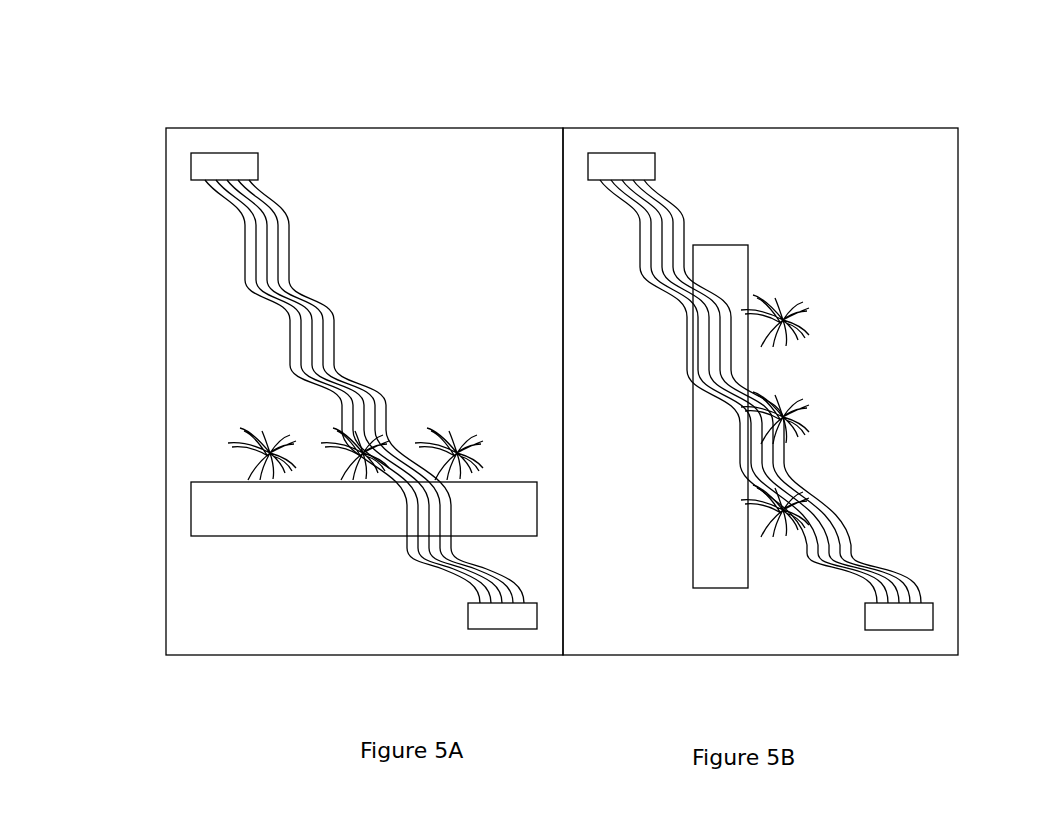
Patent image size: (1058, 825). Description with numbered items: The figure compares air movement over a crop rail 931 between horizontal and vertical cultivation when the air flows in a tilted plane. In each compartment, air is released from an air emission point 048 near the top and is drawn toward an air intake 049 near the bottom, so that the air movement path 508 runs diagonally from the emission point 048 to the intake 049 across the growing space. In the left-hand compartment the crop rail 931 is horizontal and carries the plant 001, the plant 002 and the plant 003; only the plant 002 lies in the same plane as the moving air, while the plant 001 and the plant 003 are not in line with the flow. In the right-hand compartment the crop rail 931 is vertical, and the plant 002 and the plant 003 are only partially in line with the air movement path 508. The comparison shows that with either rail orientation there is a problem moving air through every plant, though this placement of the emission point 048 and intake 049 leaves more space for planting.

In FIG. 5A, the air emission point 048 is at (227, 153).
In FIG. 5B, the air emission point 048 is at (624, 153).
In FIG. 5A, the air movement path 508 is at (250, 285).
In FIG. 5B, the air movement path 508 is at (683, 217).
In FIG. 5A, the crop rail 931 is at (273, 537).
In FIG. 5B, the crop rail 931 is at (720, 588).
In FIG. 5A, the air intake 049 is at (480, 630).
In FIG. 5B, the air intake 049 is at (877, 630).
In FIG. 5A, the plant 001 is at (240, 447).
In FIG. 5B, the plant 001 is at (780, 283).
In FIG. 5A, the plant 002 is at (330, 443).
In FIG. 5B, the plant 002 is at (807, 410).
In FIG. 5A, the plant 003 is at (445, 427).
In FIG. 5B, the plant 003 is at (780, 527).